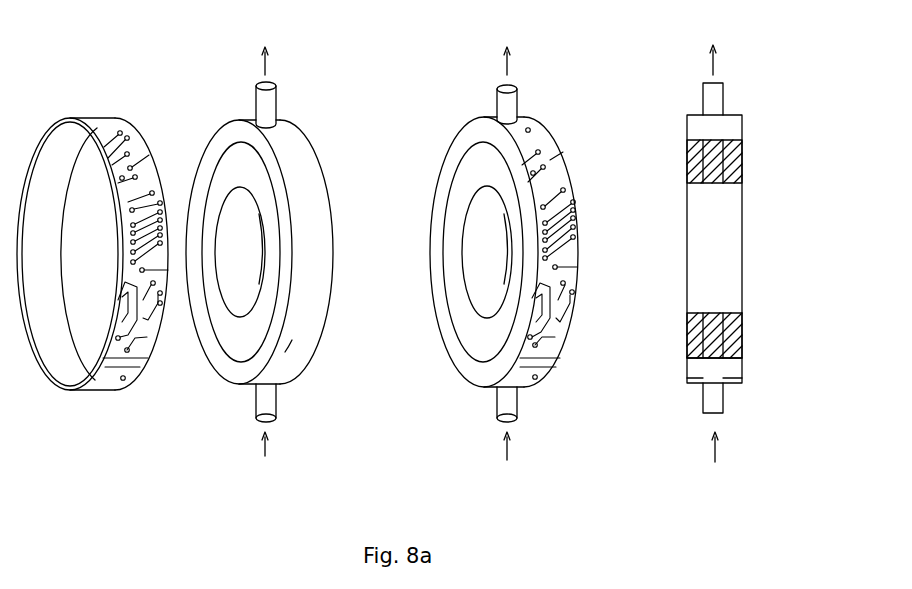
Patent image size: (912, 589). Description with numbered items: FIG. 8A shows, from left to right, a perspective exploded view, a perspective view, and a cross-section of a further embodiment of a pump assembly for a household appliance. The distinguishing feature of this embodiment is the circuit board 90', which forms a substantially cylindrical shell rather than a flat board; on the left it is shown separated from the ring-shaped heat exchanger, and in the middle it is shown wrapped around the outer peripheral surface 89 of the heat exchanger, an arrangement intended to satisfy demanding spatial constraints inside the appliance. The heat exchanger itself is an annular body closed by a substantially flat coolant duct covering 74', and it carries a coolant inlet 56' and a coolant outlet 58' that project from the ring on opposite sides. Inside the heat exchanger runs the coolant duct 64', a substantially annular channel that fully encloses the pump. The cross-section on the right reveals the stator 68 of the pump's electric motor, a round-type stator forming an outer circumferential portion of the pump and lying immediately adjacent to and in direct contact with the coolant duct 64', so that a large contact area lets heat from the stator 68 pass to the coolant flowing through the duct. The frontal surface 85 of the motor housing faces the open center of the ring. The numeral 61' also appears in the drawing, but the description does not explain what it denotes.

The circuit board 90' is at (422, 212).
The coolant duct covering 74' is at (382, 211).
The frontal surface 85 is at (233, 337).
The outer peripheral surface 89 is at (293, 364).
The coolant outlet 58' is at (529, 70).
The coolant inlet 56' is at (538, 431).
The coolant duct 64' is at (754, 242).
The stator 68 is at (740, 318).
The lower ledge 61' is at (691, 409).